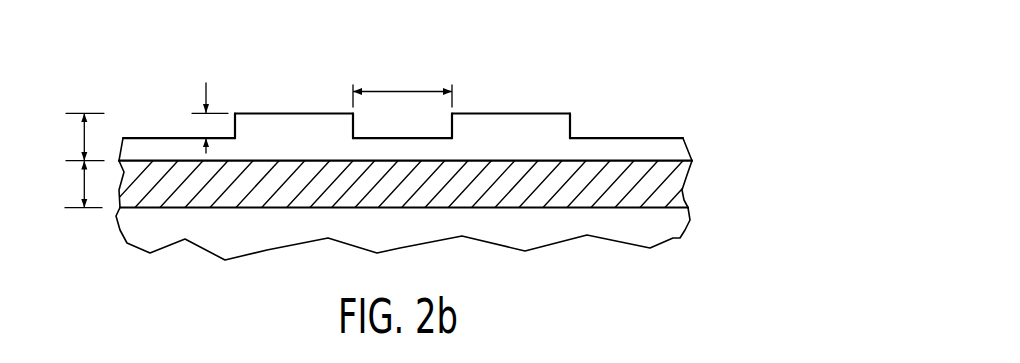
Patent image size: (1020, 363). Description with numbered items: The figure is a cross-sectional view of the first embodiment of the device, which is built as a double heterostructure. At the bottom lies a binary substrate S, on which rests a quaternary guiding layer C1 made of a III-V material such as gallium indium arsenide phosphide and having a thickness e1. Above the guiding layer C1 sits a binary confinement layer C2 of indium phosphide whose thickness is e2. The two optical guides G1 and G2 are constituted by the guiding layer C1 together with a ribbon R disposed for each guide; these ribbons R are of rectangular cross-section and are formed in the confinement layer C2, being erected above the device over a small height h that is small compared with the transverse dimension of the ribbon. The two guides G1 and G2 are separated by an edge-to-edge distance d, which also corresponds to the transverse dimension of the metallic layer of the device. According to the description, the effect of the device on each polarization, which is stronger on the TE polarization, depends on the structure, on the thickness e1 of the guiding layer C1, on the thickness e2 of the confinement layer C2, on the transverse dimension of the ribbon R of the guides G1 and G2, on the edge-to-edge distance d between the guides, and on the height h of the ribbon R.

The optical guide G1 is at (265, 108).
The optical guide G2 is at (500, 108).
The ribbon R is at (313, 109).
The edge-to-edge distance d is at (402, 85).
The height of the ribbon h is at (206, 122).
The thickness of the guiding layer e1 is at (71, 184).
The thickness of the confinement layer e2 is at (72, 137).
The guiding layer C1 is at (666, 185).
The confinement layer C2 is at (648, 150).
The substrate S is at (670, 222).